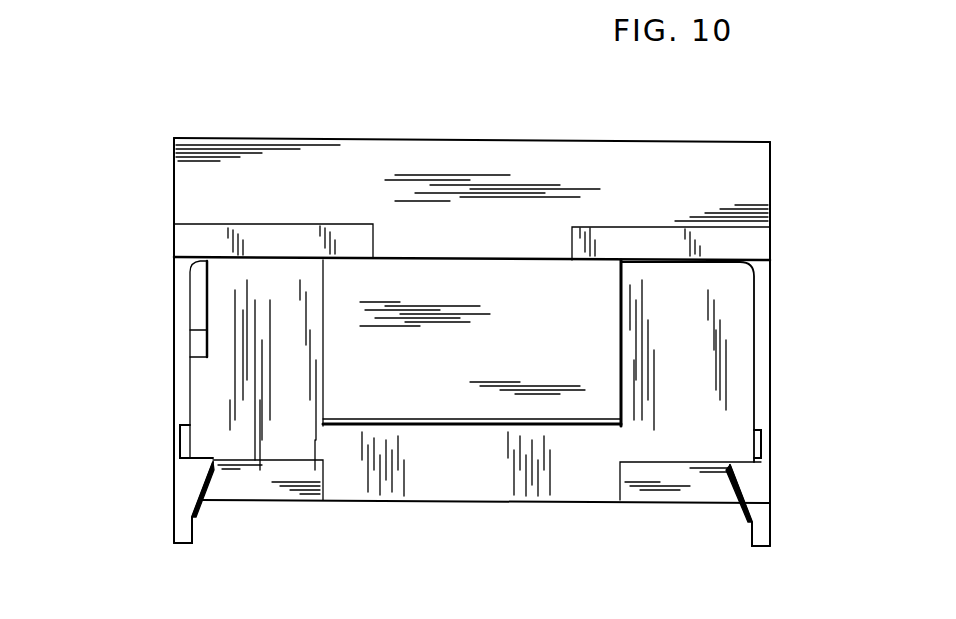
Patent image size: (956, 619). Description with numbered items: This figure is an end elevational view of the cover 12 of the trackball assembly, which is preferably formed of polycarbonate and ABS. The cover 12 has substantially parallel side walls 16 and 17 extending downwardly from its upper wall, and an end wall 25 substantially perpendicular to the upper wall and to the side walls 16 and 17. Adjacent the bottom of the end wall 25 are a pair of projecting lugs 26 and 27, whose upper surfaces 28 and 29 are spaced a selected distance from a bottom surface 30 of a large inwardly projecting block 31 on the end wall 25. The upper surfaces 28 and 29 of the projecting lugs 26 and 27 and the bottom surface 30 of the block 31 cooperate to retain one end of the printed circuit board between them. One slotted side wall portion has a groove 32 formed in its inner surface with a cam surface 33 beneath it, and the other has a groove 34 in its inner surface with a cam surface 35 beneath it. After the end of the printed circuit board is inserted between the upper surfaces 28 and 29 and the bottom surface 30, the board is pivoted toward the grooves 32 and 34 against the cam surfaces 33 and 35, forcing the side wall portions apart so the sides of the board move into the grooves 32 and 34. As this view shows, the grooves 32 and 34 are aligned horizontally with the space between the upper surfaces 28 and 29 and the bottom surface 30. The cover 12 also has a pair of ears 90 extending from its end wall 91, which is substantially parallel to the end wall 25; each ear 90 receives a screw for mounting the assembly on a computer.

The cover 12 is at (772, 190).
The side wall 16 is at (771, 305).
The side wall 17 is at (173, 240).
The end wall 25 is at (708, 357).
The projecting lug 26 is at (323, 478).
The projecting lug 27 is at (620, 483).
The upper surface 28 is at (285, 458).
The upper surface 29 is at (645, 460).
The bottom surface 30 is at (492, 430).
The block 31 is at (455, 290).
The groove 32 is at (755, 450).
The cam surface 33 is at (733, 487).
The groove 34 is at (190, 443).
The cam surface 35 is at (238, 502).
The ear 90 is at (238, 224).
The end wall 91 is at (543, 148).